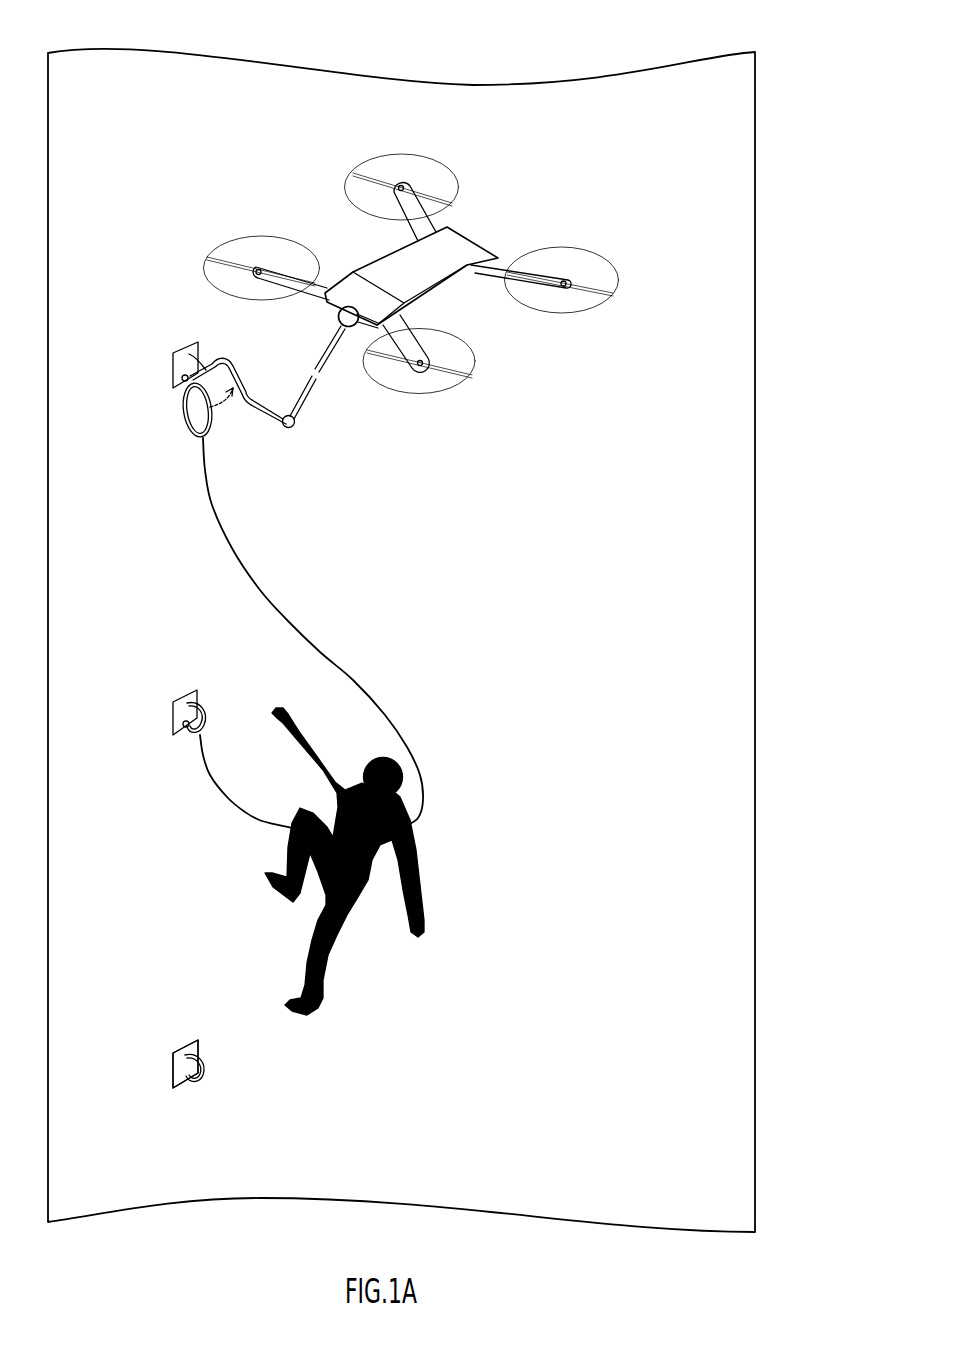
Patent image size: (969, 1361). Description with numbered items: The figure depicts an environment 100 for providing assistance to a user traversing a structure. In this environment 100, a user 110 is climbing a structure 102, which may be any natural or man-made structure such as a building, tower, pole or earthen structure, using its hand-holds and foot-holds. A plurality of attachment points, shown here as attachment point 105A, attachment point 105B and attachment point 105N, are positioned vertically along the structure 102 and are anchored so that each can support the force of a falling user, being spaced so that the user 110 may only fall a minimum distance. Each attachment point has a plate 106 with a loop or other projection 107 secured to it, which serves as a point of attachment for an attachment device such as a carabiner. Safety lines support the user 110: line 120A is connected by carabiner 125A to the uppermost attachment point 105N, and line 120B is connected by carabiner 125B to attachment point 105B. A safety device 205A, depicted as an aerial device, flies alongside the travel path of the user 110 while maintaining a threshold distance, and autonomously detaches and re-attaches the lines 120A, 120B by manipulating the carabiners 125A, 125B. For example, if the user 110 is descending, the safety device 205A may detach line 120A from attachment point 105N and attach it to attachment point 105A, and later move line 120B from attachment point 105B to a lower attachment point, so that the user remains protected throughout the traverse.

The environment 100 is at (802, 80).
The structure 102 is at (755, 568).
The safety device 205A is at (368, 263).
The attachment point 105N is at (170, 379).
The attachment point 105B is at (173, 727).
The attachment point 105A is at (172, 1075).
The carabiner 125A is at (217, 427).
The carabiner 125B is at (206, 722).
The line 120A is at (290, 621).
The line 120B is at (240, 797).
The user 110 is at (333, 933).
The plate 106 is at (187, 1047).
The loop or projection 107 is at (205, 1067).